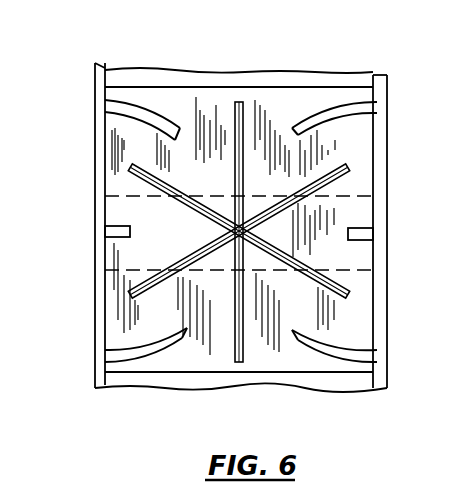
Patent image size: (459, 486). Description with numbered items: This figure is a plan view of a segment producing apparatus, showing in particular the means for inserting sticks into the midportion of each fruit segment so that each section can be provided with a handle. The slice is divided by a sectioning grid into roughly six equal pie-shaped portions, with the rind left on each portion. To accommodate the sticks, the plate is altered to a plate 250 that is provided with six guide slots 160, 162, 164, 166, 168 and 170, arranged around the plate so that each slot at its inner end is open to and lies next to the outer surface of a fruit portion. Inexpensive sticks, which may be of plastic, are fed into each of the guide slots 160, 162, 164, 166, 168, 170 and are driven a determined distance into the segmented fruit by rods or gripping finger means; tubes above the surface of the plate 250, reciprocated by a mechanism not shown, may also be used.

The plate 250 is at (272, 95).
The guide slot 170 is at (136, 102).
The guide slot 160 is at (331, 103).
The guide slot 166 is at (148, 360).
The guide slot 164 is at (328, 358).
The guide slot 168 is at (115, 226).
The guide slot 162 is at (368, 226).